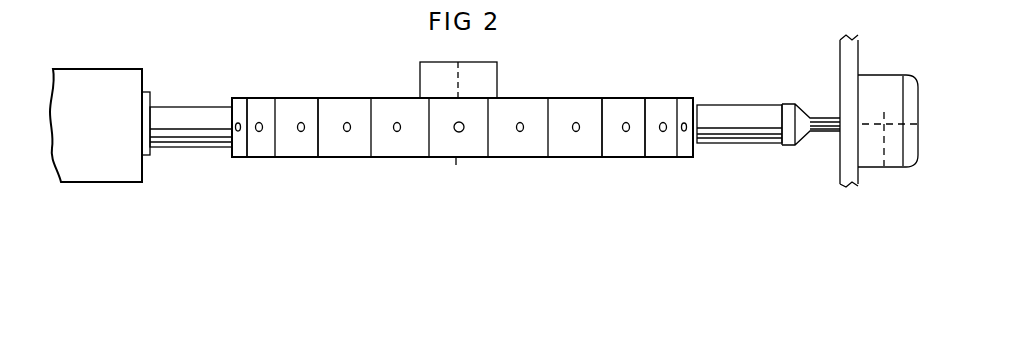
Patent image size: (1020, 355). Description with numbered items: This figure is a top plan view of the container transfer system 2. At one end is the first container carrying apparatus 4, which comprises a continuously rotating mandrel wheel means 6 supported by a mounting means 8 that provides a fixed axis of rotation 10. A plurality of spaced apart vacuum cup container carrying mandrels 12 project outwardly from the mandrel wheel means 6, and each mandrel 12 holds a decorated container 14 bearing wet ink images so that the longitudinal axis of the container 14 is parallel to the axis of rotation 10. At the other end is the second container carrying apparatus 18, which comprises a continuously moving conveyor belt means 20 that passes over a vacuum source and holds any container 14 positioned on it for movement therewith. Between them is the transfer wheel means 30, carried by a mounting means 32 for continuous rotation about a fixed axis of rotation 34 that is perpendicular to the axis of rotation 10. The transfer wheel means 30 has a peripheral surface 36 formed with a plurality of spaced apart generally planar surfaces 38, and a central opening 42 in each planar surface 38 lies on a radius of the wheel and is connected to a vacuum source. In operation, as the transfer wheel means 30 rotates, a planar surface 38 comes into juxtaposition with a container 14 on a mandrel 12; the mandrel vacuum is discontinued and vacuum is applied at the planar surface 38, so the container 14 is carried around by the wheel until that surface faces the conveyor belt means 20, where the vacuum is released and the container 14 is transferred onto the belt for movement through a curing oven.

The container transfer system 2 is at (385, 218).
The first container carrying apparatus 4 is at (826, 183).
The mandrel wheel means 6 is at (840, 58).
The mounting means 8 is at (878, 90).
The fixed axis of rotation 10 is at (884, 167).
The container carrying mandrel 12 is at (822, 133).
The decorated container 14 is at (193, 116).
The second container carrying apparatus 18 is at (113, 190).
The conveyor belt means 20 is at (147, 92).
The transfer wheel means 30 is at (540, 168).
The mounting means 32 is at (497, 78).
The fixed axis of rotation 34 is at (456, 82).
The peripheral surface 36 is at (456, 165).
The planar surfaces 38 is at (334, 104).
The central opening 42 is at (392, 125).